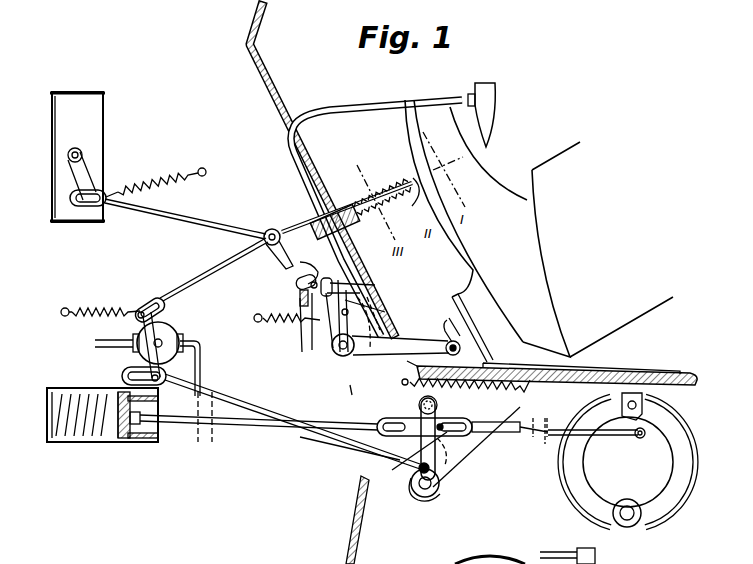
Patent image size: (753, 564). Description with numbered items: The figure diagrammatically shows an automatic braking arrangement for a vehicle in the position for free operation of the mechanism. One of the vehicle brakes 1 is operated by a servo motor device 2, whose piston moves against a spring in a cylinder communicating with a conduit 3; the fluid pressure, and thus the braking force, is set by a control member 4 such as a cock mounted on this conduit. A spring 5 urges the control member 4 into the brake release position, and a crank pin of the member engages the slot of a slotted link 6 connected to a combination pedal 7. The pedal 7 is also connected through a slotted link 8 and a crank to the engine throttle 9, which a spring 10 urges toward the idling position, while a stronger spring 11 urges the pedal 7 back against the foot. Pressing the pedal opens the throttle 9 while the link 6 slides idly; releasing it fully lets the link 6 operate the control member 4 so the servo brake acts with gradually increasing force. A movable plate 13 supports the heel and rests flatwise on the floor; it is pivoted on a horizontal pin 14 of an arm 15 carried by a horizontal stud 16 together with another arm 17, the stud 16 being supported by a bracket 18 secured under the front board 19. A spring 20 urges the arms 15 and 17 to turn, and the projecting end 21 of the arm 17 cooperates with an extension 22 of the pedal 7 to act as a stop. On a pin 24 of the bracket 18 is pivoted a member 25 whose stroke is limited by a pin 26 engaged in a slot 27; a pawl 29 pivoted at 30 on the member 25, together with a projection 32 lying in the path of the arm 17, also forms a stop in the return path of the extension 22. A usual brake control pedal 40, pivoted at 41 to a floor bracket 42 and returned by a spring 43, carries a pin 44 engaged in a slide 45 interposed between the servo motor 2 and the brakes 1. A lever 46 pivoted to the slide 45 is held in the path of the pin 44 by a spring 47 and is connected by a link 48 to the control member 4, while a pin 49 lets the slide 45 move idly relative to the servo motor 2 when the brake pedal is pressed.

The vehicle brake 1 is at (578, 483).
The servo motor device 2 is at (108, 450).
The conduit 3 is at (201, 360).
The control member 4 is at (170, 336).
The spring 5 is at (101, 309).
The slotted link 6 is at (172, 296).
The pedal 7 is at (416, 200).
The slotted link 8 is at (150, 219).
The engine throttle 9 is at (87, 158).
The spring 10 is at (146, 178).
The spring 11 is at (374, 190).
The movable plate 13 is at (606, 368).
The horizontal pin 14 is at (449, 328).
The arm 15 is at (390, 336).
The horizontal stud 16 is at (343, 357).
The arm 17 is at (372, 348).
The bracket 18 is at (378, 309).
The front board 19 is at (310, 151).
The spring 20 is at (290, 322).
The projecting end 21 is at (305, 248).
The extension 22 is at (285, 264).
The pin 24 is at (311, 305).
The member 25 is at (330, 340).
The pin 26 is at (360, 294).
The slot 27 is at (335, 284).
The pawl 29 is at (300, 284).
The pivot 30 is at (305, 294).
The projection 32 is at (355, 232).
The brake control pedal 40 is at (488, 114).
The pivot 41 is at (436, 494).
The bracket 42 is at (468, 444).
The return spring 43 is at (490, 390).
The pin 44 is at (470, 437).
The slide 45 is at (352, 395).
The lever 46 is at (417, 458).
The spring 47 is at (460, 460).
The link 48 is at (235, 401).
The pin 49 is at (345, 439).